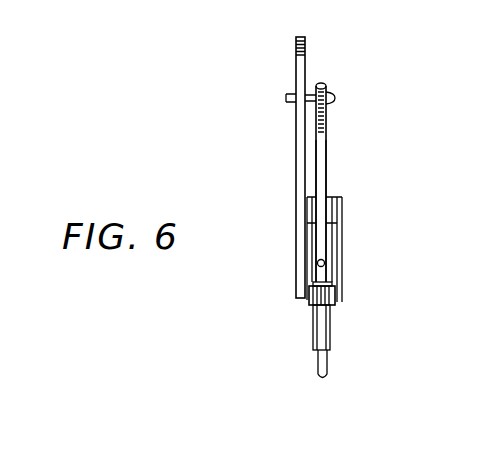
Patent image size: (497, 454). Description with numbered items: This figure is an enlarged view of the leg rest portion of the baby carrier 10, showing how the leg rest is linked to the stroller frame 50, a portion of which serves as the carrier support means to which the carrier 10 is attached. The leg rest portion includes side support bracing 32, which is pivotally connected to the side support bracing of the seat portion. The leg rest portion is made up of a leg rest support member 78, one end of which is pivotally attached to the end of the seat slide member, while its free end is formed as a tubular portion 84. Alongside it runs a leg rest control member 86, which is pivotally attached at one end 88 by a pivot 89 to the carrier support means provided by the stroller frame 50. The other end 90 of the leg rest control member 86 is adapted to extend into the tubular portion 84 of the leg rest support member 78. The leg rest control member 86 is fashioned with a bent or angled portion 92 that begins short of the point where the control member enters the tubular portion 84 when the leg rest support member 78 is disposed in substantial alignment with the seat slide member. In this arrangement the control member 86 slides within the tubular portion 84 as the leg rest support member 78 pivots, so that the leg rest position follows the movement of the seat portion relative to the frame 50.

The carrier 10 is at (245, 310).
The leg rest portion side support bracing 32 is at (272, 167).
The stroller frame 50 is at (296, 124).
The leg rest support member 78 is at (335, 310).
The tubular portion 84 is at (313, 340).
The leg rest control member 86 is at (324, 158).
The end of leg rest control member 88 is at (326, 118).
The pivot 89 is at (334, 98).
The other end of leg rest control member 90 is at (327, 362).
The bent or angled portion 92 is at (324, 265).